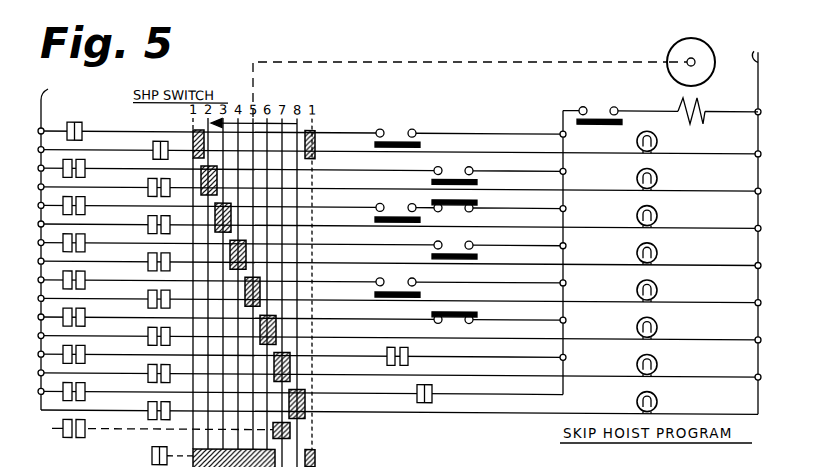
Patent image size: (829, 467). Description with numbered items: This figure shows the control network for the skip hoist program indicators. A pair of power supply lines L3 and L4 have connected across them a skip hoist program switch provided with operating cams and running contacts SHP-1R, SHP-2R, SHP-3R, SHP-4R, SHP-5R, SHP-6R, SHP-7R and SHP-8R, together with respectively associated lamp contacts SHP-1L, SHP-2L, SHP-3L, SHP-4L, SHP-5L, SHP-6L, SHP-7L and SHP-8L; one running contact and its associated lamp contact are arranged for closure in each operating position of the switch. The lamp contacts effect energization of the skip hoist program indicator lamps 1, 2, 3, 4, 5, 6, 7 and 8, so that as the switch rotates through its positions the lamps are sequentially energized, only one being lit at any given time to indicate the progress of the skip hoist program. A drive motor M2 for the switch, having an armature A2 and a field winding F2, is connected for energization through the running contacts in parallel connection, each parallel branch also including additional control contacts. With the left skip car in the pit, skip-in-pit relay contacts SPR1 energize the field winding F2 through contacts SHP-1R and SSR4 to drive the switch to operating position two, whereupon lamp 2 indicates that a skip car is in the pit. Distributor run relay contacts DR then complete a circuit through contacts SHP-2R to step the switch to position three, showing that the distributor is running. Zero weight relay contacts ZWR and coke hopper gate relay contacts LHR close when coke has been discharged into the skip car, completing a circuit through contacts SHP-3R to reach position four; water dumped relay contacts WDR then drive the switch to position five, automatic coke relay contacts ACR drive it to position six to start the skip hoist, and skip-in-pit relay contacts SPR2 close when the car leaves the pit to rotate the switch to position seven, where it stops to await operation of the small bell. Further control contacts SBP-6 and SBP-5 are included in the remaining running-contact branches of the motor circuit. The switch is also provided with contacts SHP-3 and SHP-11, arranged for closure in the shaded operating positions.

The power supply line L3 is at (54, 248).
The power supply line L4 is at (756, 225).
The armature A2 is at (667, 49).
The drive motor M2 is at (702, 92).
The field winding F2 is at (676, 99).
The contacts SSR4 is at (601, 111).
The skip hoist program indicator lamp 1 is at (658, 139).
The skip hoist program indicator lamp 2 is at (658, 176).
The skip hoist program indicator lamp 3 is at (658, 213).
The skip hoist program indicator lamp 4 is at (658, 250).
The skip hoist program indicator lamp 5 is at (658, 288).
The skip hoist program indicator lamp 6 is at (658, 325).
The skip hoist program indicator lamp 7 is at (658, 362).
The skip hoist program indicator lamp 8 is at (658, 399).
The skip-in-pit relay contacts SPR1 is at (397, 131).
The distributor run relay contacts DR is at (455, 168).
The zero weight relay contacts ZWR is at (392, 209).
The coke hopper gate relay contacts LHR is at (458, 210).
The water dumped relay contacts WDR is at (458, 245).
The automatic coke relay contacts ACR is at (396, 282).
The skip-in-pit relay contacts SPR2 is at (452, 322).
The contact SBP-6 is at (401, 344).
The contact SBP-5 is at (426, 381).
The running contact SHP-1R is at (80, 118).
The lamp contact SHP-1L is at (152, 140).
The running contact SHP-2R is at (77, 157).
The lamp contact SHP-2L is at (156, 176).
The running contact SHP-3R is at (77, 194).
The lamp contact SHP-3L is at (156, 213).
The running contact SHP-4R is at (77, 231).
The lamp contact SHP-4L is at (156, 250).
The running contact SHP-5R is at (77, 268).
The lamp contact SHP-5L is at (156, 287).
The running contact SHP-6R is at (77, 305).
The lamp contact SHP-6L is at (156, 324).
The running contact SHP-7R is at (77, 343).
The lamp contact SHP-7L is at (156, 362).
The running contact SHP-8R is at (77, 380).
The lamp contact SHP-8L is at (156, 399).
The SHP switch contact SHP-3 is at (72, 438).
The SHP switch contact SHP-11 is at (151, 456).